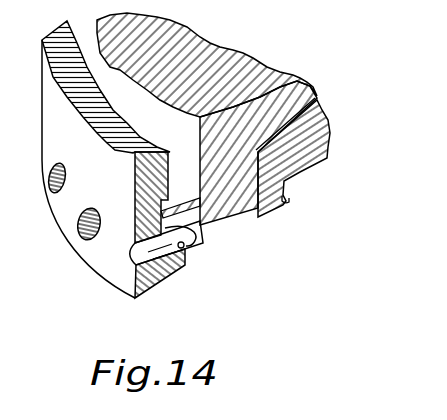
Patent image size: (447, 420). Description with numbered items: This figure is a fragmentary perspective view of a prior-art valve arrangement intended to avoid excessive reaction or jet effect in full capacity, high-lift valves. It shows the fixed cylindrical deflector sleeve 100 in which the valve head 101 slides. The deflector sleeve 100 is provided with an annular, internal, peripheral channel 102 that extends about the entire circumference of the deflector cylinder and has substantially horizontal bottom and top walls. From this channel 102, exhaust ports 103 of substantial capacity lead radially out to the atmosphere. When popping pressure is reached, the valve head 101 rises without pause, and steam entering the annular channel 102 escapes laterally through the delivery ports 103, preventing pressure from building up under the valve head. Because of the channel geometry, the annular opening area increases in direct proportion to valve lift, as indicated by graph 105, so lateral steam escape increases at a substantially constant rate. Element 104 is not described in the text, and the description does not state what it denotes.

The fixed cylindrical deflector sleeve 100 is at (153, 293).
The valve head 101 is at (311, 100).
The annular internal peripheral channel 102 is at (193, 233).
The exhaust ports 103 is at (133, 263).
The foot portion 104 is at (192, 249).
The graph 105 is at (196, 226).